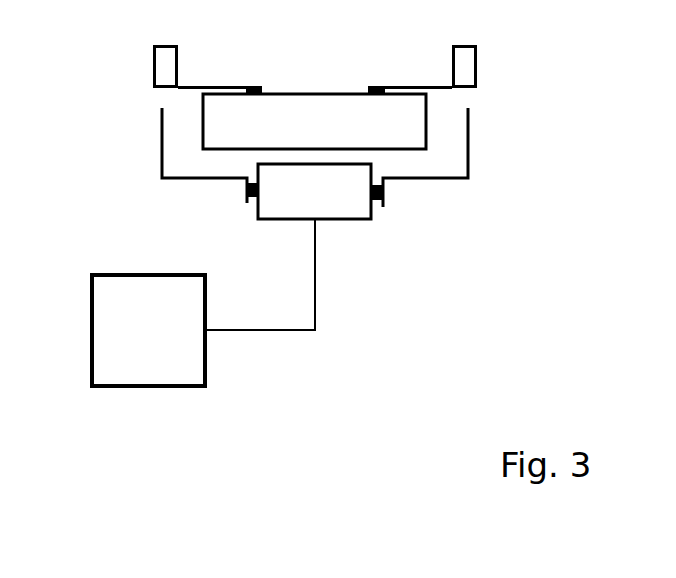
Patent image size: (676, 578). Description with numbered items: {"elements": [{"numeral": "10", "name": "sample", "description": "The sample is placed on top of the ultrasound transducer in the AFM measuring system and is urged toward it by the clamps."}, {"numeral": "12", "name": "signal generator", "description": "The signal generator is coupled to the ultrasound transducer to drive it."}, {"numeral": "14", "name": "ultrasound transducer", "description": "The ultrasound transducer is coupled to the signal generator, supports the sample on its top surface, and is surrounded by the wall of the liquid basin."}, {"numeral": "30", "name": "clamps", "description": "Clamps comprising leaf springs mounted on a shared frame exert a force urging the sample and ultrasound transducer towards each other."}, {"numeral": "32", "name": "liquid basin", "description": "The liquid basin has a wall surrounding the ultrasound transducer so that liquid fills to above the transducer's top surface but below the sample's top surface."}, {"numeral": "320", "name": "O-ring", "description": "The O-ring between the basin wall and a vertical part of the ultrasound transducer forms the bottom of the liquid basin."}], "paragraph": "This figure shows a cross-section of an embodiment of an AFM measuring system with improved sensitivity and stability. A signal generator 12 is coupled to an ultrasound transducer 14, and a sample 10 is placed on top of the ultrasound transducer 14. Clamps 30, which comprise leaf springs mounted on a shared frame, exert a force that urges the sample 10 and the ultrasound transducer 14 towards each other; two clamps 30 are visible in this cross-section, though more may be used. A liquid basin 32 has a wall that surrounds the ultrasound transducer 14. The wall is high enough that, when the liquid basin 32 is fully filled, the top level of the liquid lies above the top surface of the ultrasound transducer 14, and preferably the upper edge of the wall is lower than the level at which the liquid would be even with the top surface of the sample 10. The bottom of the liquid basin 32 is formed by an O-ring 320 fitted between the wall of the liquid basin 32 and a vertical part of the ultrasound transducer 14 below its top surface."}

The housing / base body 10 is at (430, 117).
The control unit 12 is at (91, 296).
The actuator / drive unit 14 is at (345, 225).
The holding elements 30 is at (228, 88).
The support arms 32 is at (153, 50).
The connecting elements 320 is at (244, 206).